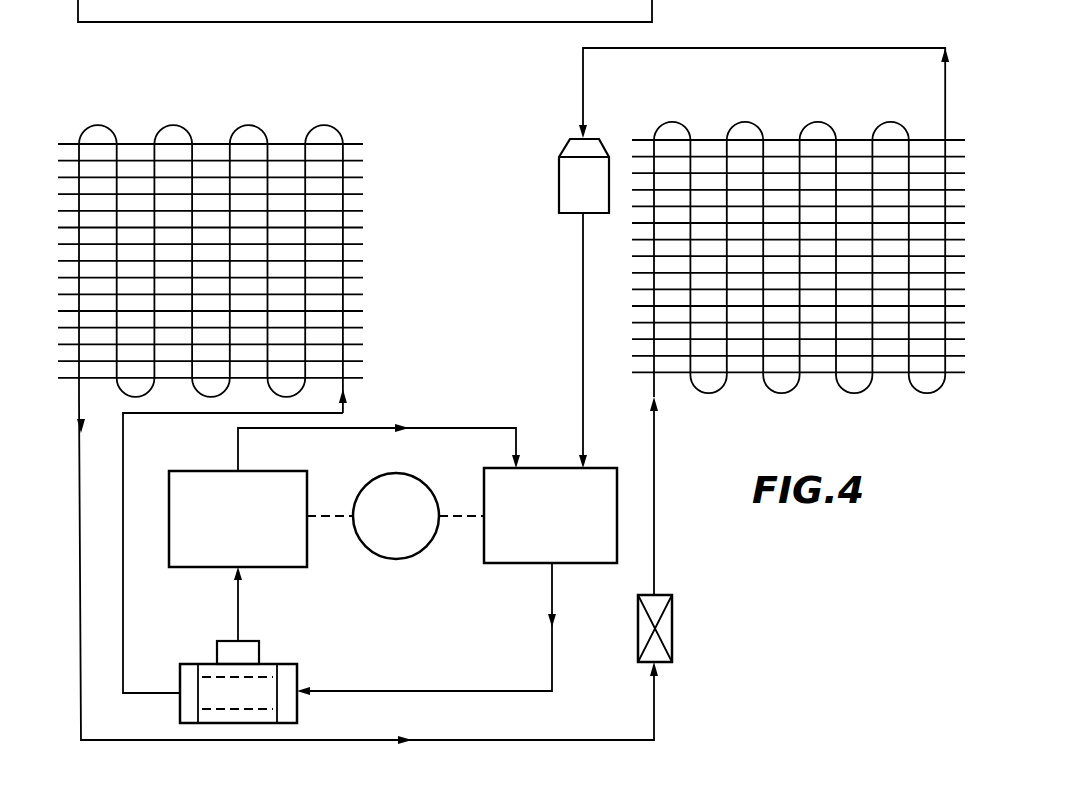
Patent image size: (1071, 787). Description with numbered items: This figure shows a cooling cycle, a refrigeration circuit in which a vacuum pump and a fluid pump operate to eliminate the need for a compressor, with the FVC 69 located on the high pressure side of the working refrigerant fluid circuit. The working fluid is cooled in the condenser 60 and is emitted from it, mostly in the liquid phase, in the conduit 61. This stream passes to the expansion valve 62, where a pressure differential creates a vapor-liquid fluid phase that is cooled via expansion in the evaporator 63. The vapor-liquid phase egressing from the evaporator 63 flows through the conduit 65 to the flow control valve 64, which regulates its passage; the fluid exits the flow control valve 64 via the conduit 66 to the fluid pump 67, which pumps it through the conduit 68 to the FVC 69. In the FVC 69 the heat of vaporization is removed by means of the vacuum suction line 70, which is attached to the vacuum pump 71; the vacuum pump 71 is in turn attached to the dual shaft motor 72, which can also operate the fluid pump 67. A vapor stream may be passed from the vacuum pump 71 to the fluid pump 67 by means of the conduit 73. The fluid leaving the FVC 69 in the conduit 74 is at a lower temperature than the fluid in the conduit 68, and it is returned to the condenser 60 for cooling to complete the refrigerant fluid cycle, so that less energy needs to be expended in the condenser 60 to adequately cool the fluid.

The condenser 60 is at (289, 91).
The conduit 61 is at (83, 552).
The expansion valve 62 is at (672, 628).
The evaporator 63 is at (878, 88).
The flow control valve 64 is at (559, 196).
The conduit 65 is at (820, 47).
The conduit 66 is at (583, 293).
The fluid pump 67 is at (603, 467).
The conduit 68 is at (552, 654).
The FVC 69 is at (286, 664).
The vacuum suction line 70 is at (238, 613).
The vacuum pump 71 is at (188, 471).
The dual shaft motor 72 is at (428, 476).
The conduit 73 is at (470, 428).
The conduit 74 is at (123, 609).